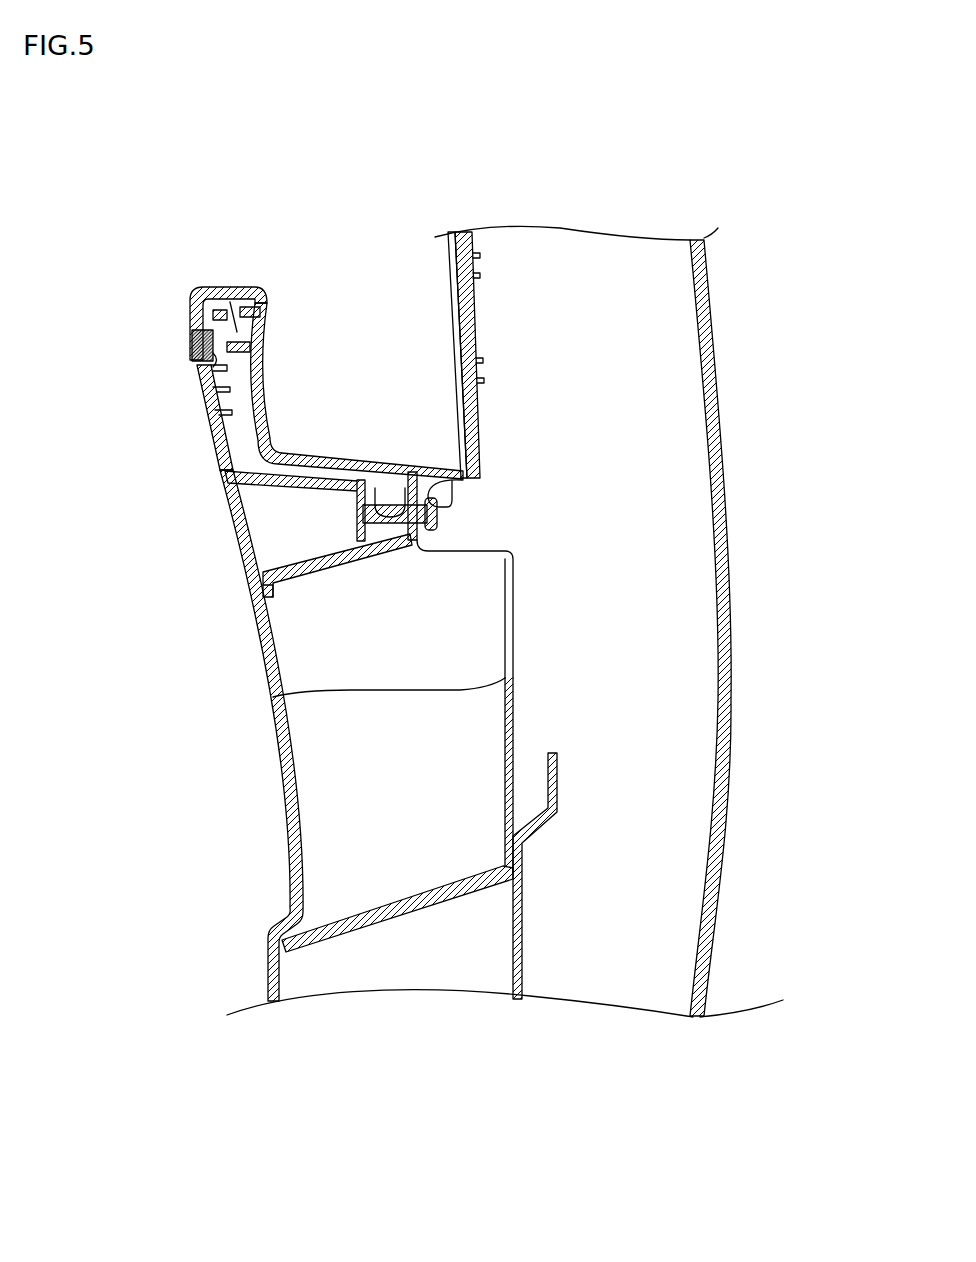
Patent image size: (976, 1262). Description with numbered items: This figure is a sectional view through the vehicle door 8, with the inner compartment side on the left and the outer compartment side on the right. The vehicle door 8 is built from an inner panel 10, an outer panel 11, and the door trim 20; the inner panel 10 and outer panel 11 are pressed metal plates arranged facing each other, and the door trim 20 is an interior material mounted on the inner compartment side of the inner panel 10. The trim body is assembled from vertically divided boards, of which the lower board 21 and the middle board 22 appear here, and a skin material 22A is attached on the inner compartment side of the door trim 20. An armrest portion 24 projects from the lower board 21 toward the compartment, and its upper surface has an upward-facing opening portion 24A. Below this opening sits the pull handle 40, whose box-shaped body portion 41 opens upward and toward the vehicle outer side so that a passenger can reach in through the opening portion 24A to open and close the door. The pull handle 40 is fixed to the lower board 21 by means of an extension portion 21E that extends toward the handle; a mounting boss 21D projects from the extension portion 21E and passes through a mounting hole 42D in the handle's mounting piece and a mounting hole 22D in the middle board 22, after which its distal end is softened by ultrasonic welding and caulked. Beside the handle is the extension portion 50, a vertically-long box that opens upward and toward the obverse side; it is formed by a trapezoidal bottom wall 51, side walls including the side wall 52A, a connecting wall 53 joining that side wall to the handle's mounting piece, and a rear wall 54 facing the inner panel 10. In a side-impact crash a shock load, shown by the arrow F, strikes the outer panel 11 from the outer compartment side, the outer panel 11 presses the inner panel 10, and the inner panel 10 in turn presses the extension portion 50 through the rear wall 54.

The vehicle door 8 is at (658, 192).
The inner panel 10 is at (522, 940).
The outer panel 11 is at (730, 604).
The door trim 20 is at (220, 990).
The lower board 21 is at (278, 818).
The mounting boss 21D is at (350, 513).
The extension portion 21E is at (280, 478).
The middle board 22 is at (480, 303).
The skin material 22A is at (447, 253).
The mounting hole 22D is at (417, 473).
The armrest portion 24 is at (215, 287).
The opening portion 24A is at (267, 297).
The pull handle 40 is at (287, 370).
The body portion 41 is at (235, 368).
The mounting hole 42D is at (380, 507).
The extension portion 50 is at (397, 881).
The bottom wall 51 is at (337, 940).
The side wall 52A is at (313, 663).
The connecting wall 53 is at (317, 570).
The rear wall 54 is at (505, 800).
The shock load F is at (740, 803).